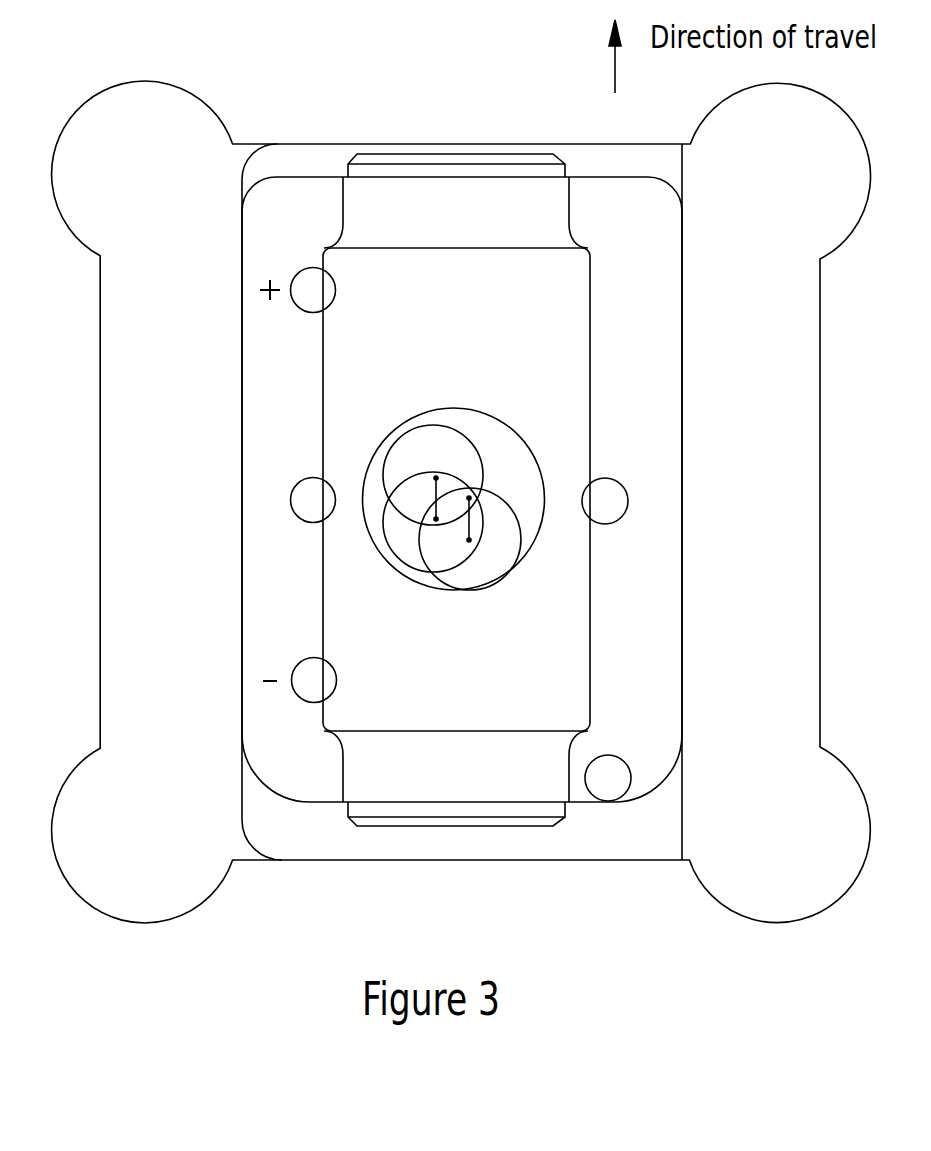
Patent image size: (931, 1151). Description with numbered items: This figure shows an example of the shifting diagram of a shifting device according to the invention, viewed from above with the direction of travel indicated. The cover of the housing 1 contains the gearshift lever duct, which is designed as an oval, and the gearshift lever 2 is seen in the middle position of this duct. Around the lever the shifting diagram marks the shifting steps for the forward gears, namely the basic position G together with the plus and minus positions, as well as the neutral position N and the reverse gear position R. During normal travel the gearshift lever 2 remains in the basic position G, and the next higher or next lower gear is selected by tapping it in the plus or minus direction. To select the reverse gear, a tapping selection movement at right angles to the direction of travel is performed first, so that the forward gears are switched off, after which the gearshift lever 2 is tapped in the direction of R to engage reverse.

The housing 1 is at (662, 315).
The gearshift lever 2 is at (462, 455).
The basic position G is at (301, 512).
The neutral position N is at (620, 513).
The reverse gear position R is at (621, 769).